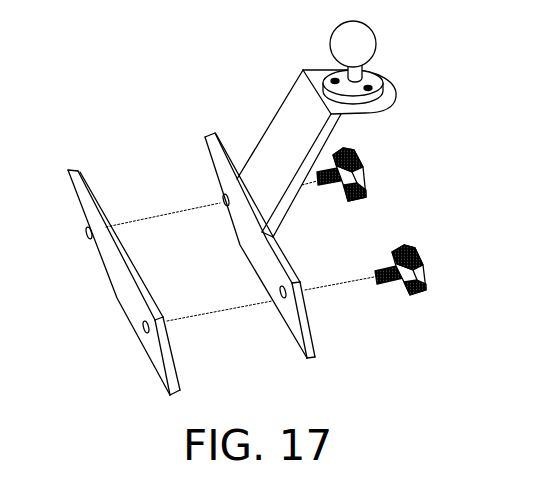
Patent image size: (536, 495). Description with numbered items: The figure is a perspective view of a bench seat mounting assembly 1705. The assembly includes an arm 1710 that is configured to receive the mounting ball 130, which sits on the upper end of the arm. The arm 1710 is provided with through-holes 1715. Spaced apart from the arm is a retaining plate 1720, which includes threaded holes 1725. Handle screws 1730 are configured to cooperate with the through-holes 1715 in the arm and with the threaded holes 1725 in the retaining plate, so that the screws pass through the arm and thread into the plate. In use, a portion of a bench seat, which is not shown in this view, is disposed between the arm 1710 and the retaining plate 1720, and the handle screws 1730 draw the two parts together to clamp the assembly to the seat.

The bench seat mounting assembly 1705 is at (152, 88).
The mounting ball 130 is at (342, 40).
The arm 1710 is at (267, 152).
The through-holes 1715 is at (270, 295).
The retaining plate 1720 is at (150, 360).
The threaded holes 1725 is at (144, 329).
The handle screws 1730 is at (353, 178).